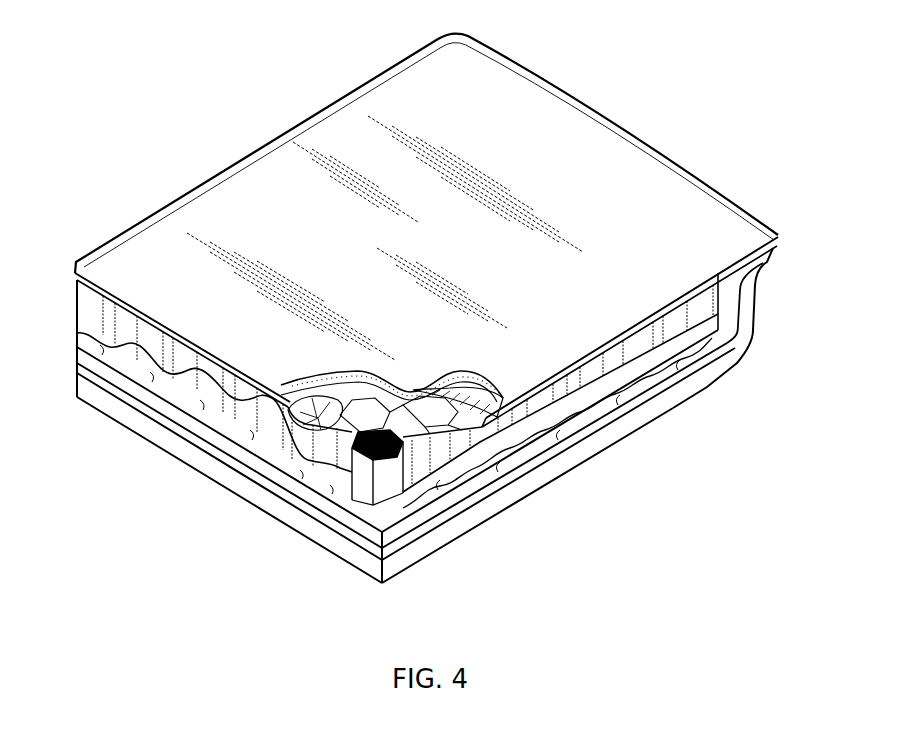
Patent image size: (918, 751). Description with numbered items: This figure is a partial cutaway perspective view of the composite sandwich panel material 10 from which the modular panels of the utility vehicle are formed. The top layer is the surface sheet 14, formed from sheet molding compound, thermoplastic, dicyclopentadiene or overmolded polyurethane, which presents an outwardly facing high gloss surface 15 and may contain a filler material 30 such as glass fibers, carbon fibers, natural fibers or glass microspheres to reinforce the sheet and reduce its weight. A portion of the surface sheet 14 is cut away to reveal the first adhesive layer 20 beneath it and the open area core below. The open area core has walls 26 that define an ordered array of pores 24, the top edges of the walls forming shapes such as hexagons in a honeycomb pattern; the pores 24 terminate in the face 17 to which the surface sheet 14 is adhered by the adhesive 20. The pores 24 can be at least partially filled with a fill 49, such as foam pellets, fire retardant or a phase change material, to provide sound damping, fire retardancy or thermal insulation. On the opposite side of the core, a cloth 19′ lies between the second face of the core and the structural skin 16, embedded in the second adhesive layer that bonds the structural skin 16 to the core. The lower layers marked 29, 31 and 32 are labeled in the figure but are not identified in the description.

The composite sandwich panel material 10 is at (714, 129).
The surface sheet 14 is at (93, 250).
The high gloss surface 15 is at (278, 223).
The face 17 is at (348, 418).
The first adhesive layer 20 is at (318, 385).
The filler material 30 is at (303, 383).
The pores 24 is at (417, 391).
The fill 49 is at (404, 410).
The walls 26 is at (399, 503).
The cloth 19′ is at (577, 417).
The structural skin 16 is at (633, 393).
The lower layer 32 is at (490, 467).
The bottom layer 29 is at (462, 533).
The bottom edge 31 is at (380, 560).